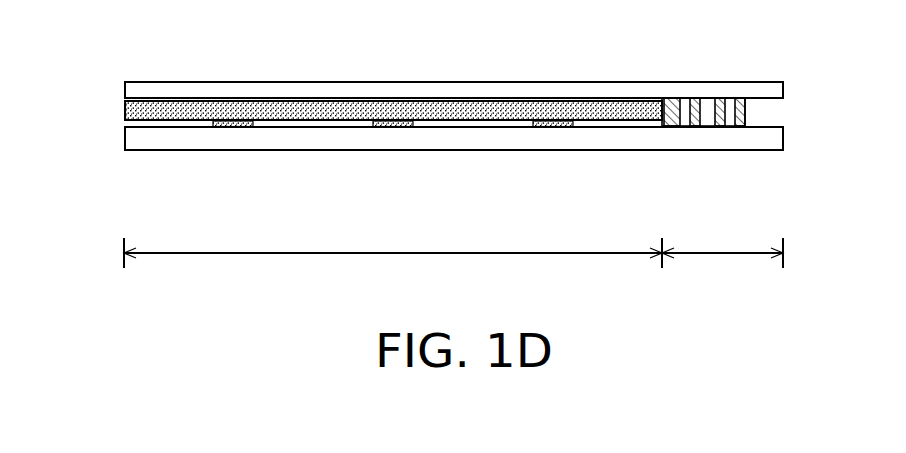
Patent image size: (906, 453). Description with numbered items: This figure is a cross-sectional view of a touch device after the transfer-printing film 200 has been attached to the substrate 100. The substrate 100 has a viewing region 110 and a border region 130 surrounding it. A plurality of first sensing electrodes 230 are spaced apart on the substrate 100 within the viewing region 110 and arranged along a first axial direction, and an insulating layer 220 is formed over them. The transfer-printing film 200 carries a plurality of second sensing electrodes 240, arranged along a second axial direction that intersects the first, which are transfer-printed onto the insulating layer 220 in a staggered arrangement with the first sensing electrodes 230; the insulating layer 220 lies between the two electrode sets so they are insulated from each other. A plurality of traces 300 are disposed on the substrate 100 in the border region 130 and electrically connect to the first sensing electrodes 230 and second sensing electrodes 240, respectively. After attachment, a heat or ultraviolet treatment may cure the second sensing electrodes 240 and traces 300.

The substrate 100 is at (127, 141).
The transfer-printing film 200 is at (127, 93).
The insulating layer 220 is at (613, 108).
The second sensing electrodes 240 is at (165, 108).
The first sensing electrodes 230 is at (233, 127).
The traces 300 is at (738, 97).
The viewing region 110 is at (393, 242).
The border region 130 is at (722, 242).